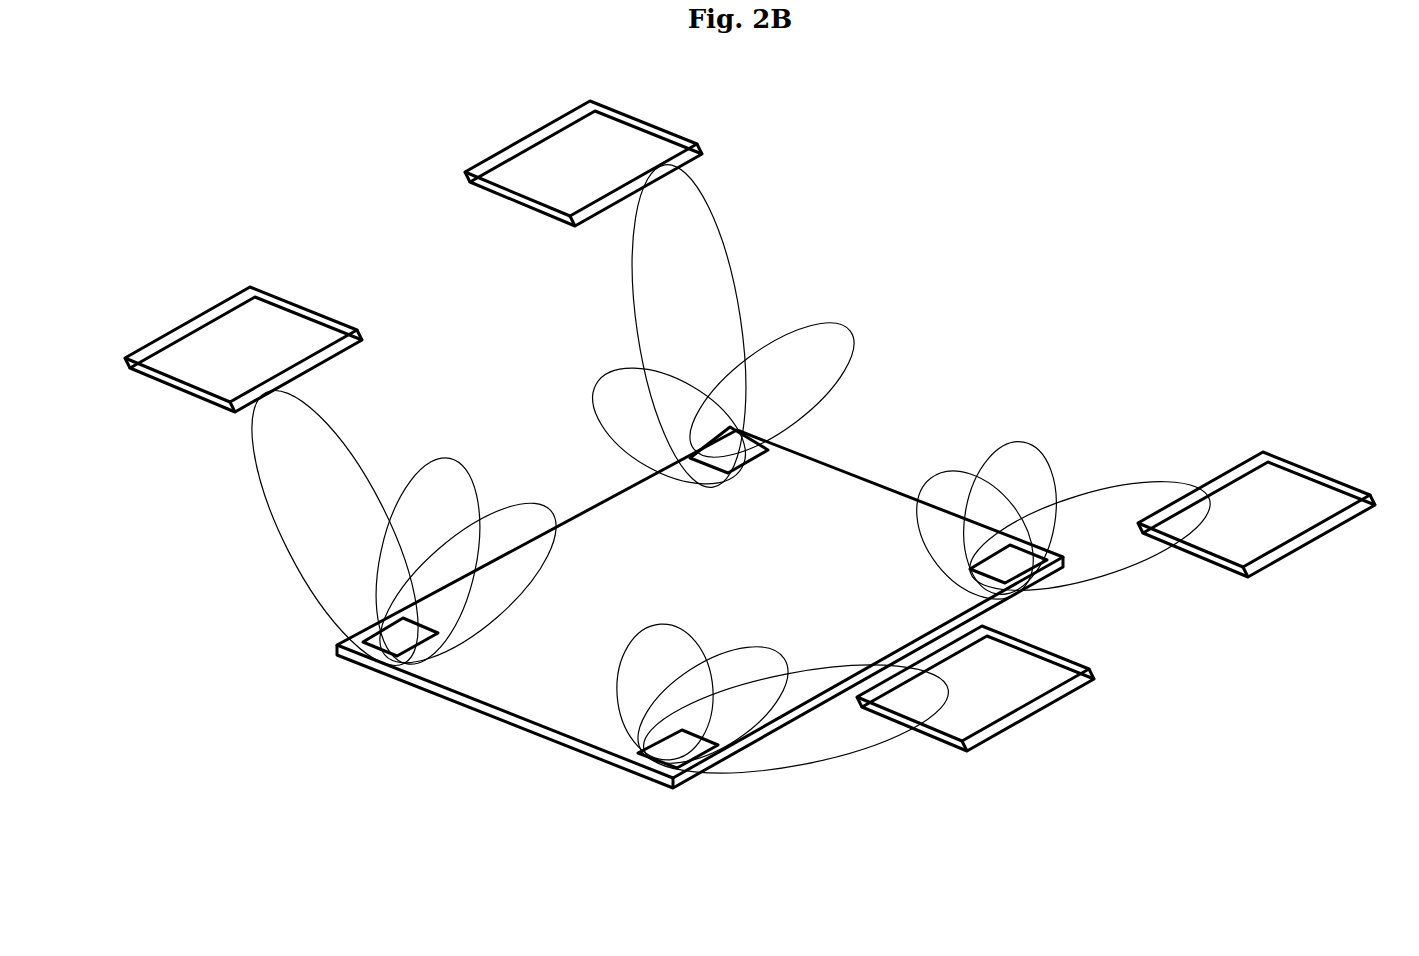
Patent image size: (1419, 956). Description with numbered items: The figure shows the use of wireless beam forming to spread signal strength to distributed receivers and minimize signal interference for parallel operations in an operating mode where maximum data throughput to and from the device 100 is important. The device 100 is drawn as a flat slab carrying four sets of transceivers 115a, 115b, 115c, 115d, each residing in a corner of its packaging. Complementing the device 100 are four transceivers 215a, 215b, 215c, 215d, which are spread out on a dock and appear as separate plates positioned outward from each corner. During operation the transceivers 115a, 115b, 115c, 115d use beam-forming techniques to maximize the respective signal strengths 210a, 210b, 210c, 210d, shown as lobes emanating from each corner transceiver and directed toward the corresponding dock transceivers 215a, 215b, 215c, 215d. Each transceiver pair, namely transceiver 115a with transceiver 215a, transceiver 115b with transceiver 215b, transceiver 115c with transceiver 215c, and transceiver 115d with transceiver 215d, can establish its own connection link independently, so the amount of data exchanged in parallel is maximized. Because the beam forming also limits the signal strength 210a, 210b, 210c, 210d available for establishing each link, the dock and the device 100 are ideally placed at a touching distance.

The device 100 is at (480, 712).
The transceiver 115a is at (363, 641).
The transceiver 115b is at (660, 763).
The transceiver 115c is at (755, 452).
The transceiver 115d is at (1035, 575).
The signal strength 210a is at (350, 462).
The signal strength 210b is at (805, 765).
The signal strength 210c is at (731, 262).
The signal strength 210d is at (1145, 572).
The transceiver 215a is at (272, 318).
The transceiver 215b is at (975, 708).
The transceiver 215c is at (613, 132).
The transceiver 215d is at (1260, 527).